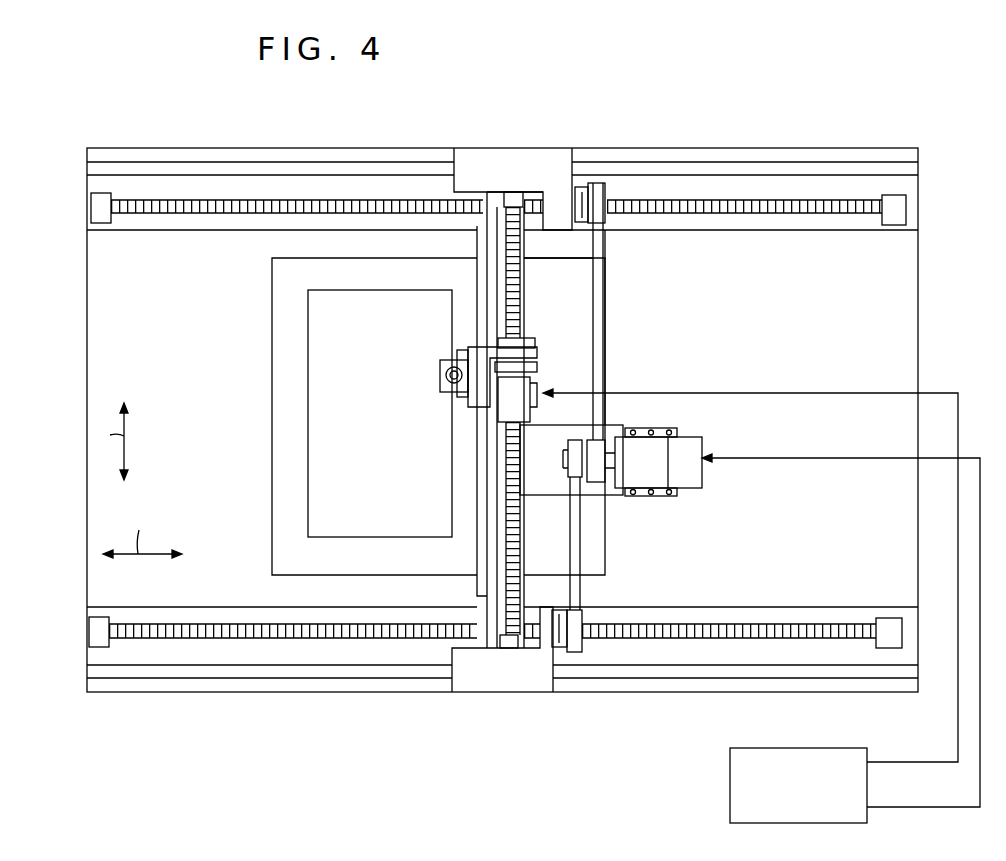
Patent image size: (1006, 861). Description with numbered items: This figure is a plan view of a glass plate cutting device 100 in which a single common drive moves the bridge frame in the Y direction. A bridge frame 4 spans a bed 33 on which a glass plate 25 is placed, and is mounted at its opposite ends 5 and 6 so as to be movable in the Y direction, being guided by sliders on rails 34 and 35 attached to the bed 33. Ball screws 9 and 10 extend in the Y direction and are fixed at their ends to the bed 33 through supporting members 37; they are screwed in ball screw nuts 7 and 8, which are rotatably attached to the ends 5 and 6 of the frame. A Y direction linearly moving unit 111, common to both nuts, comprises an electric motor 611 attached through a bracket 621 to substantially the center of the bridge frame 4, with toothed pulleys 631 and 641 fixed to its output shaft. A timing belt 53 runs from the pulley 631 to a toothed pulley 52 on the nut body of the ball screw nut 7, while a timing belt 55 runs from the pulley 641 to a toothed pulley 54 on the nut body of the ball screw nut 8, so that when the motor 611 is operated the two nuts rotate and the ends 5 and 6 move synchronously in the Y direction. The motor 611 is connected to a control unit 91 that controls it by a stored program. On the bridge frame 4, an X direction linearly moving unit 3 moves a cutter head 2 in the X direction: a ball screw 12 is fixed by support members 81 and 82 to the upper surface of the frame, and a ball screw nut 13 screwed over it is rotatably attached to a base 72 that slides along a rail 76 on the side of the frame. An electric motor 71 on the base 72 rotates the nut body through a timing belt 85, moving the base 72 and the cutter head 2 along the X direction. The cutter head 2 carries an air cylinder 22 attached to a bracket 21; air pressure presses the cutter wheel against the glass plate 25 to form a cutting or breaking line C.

The glass plate cutting device 100 is at (657, 97).
The bed 33 is at (87, 302).
The rail 35 is at (160, 168).
The rail 34 is at (190, 677).
The ball screw 10 is at (272, 200).
The ball screw 9 is at (318, 638).
The supporting members 37 is at (93, 208).
The end of bridge frame 6 is at (467, 160).
The end of bridge frame 5 is at (462, 675).
The support member 82 is at (515, 192).
The support member 81 is at (513, 648).
The bridge frame 4 is at (493, 503).
The rail 76 is at (477, 553).
The ball screw 12 is at (520, 302).
The ball screw nut 13 is at (527, 341).
The base 72 is at (478, 350).
The timing belt 85 is at (540, 368).
The X direction linearly moving unit 3 is at (543, 380).
The electric motor 71 is at (498, 423).
The bracket 21 is at (457, 403).
The air cylinder 22 is at (447, 375).
The cutter head 2 is at (433, 393).
The glass plate 25 is at (272, 458).
The cutting or breaking line C is at (308, 372).
The ball screw nut 8 is at (578, 235).
The timing belt 55 is at (588, 187).
The toothed pulley 54 is at (607, 188).
The timing belt 53 is at (580, 545).
The toothed pulley 641 is at (603, 450).
The toothed pulley 631 is at (573, 478).
The electric motor 611 is at (685, 447).
The bracket 621 is at (677, 486).
The Y direction linearly moving unit 111 is at (720, 433).
The control unit 91 is at (730, 770).
The ball screw nut 7 is at (555, 608).
The toothed pulley 52 is at (587, 618).